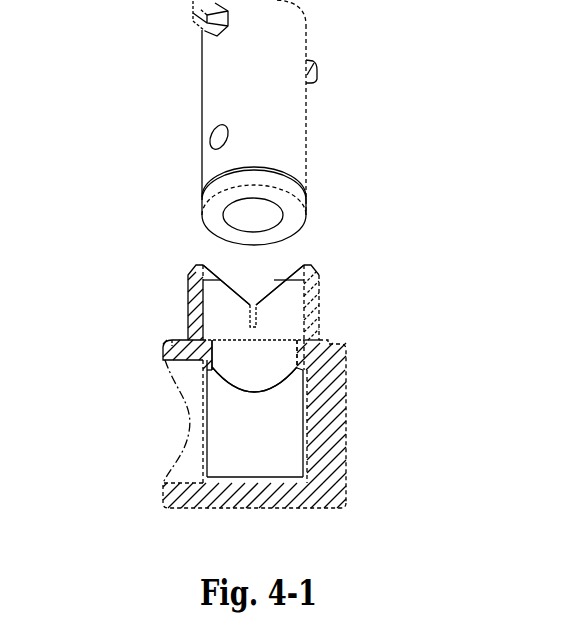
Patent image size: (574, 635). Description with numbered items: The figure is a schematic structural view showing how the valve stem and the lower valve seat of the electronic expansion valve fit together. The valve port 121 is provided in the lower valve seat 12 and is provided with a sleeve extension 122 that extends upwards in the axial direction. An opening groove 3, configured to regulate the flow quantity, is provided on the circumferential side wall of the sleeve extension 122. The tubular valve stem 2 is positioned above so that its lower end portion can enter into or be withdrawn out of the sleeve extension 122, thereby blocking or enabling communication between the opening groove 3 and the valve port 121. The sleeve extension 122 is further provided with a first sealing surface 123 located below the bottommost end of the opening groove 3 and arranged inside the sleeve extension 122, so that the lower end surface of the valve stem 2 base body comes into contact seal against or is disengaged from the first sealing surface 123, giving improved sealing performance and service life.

The valve stem 2 is at (232, 97).
The opening groove 3 is at (258, 278).
The lower valve seat 12 is at (337, 412).
The valve port 121 is at (230, 358).
The sleeve extension 122 is at (319, 313).
The first sealing surface 123 is at (300, 347).